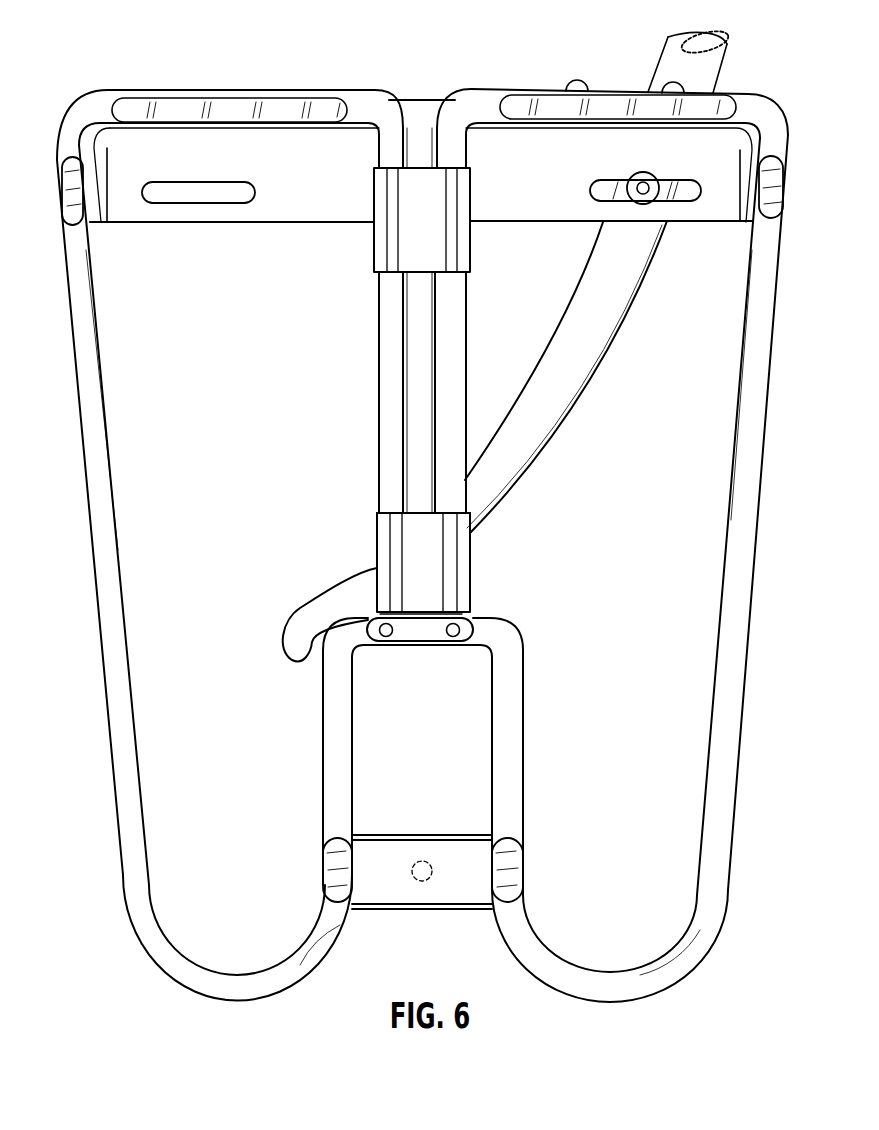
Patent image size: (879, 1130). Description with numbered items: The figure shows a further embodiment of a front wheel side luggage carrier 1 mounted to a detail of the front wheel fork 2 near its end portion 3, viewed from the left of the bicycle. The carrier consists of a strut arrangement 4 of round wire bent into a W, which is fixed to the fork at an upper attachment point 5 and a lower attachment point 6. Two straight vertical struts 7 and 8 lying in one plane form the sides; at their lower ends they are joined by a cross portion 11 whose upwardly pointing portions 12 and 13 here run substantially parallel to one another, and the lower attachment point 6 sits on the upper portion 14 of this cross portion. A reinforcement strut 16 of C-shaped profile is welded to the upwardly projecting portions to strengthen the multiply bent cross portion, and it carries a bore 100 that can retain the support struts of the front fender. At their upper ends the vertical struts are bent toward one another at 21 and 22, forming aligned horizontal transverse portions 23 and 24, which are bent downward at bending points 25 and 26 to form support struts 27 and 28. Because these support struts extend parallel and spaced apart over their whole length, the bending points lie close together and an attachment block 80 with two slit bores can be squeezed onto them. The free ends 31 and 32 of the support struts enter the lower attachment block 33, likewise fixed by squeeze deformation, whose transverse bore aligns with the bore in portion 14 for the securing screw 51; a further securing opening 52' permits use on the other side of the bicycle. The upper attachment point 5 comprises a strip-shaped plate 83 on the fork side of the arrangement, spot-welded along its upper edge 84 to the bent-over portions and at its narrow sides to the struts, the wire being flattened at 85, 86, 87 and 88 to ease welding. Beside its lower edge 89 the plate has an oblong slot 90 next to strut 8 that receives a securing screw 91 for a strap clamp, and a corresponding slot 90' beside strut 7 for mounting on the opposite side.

The front wheel side luggage carrier 1 is at (328, 75).
The front wheel fork 2 is at (590, 345).
The end portion 3 is at (290, 624).
The strut arrangement 4 is at (718, 440).
The upper attachment point 5 is at (568, 233).
The lower attachment point 6 is at (431, 668).
The vertical strut 7 is at (116, 470).
The vertical strut 8 is at (742, 621).
The cross portion 11 is at (268, 972).
The upwardly pointing portion 12 is at (323, 760).
The upwardly pointing portion 13 is at (523, 756).
The upper portion 14 is at (480, 648).
The reinforcement strut 16 is at (418, 912).
The bend 21 is at (74, 108).
The bend 22 is at (756, 99).
The transverse bent-over portion 23 is at (101, 94).
The transverse bent-over portion 24 is at (597, 89).
The bending point 25 is at (376, 93).
The bending point 26 is at (461, 93).
The support strut 27 is at (378, 344).
The support strut 28 is at (467, 344).
The free end 31 is at (377, 515).
The free end 32 is at (468, 500).
The attachment block 33 is at (377, 551).
The securing screw 51 is at (386, 640).
The further securing opening 52' is at (451, 601).
The attachment block 80 is at (374, 246).
The elongated plate 83 is at (335, 188).
The upper edge 84 is at (424, 100).
The flattened area 85 is at (188, 103).
The flattened area 86 is at (625, 105).
The flattened area 87 is at (90, 217).
The flattened area 88 is at (775, 158).
The lower edge 89 is at (290, 223).
The oblong slot 90 is at (651, 222).
The further oblong slot 90' is at (198, 226).
The securing screw 91 is at (634, 178).
The bore 100 is at (422, 861).